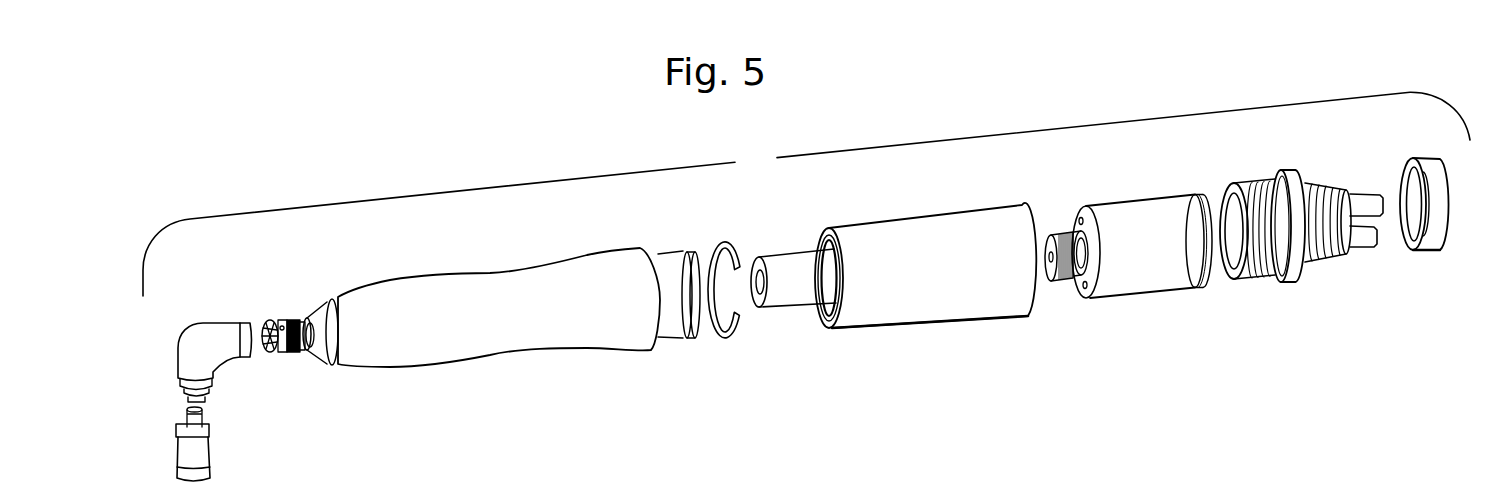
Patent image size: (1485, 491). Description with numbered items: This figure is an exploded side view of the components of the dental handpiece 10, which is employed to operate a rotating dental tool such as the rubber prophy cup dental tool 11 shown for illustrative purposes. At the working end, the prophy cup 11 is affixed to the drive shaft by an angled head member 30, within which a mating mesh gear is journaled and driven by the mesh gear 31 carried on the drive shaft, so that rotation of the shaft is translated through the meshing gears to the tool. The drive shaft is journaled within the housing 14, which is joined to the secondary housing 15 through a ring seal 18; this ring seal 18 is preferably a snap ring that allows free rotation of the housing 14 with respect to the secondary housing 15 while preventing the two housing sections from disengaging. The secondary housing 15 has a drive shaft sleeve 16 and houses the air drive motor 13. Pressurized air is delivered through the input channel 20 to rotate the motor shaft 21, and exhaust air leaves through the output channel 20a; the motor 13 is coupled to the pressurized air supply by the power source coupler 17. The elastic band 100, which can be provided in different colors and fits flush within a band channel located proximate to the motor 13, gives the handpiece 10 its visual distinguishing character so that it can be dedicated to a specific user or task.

The handpiece 10 is at (777, 158).
The angled head member 30 is at (201, 340).
The mesh gear 31 is at (267, 352).
The rubber prophy cup dental tool 11 is at (210, 468).
The housing 14 is at (523, 333).
The ring seal 18 is at (723, 338).
The drive shaft sleeve 16 is at (790, 300).
The secondary housing 15 is at (948, 307).
The motor shaft 21 is at (1067, 280).
The air drive motor 13 is at (1150, 270).
The power source coupler 17 is at (1292, 283).
The pressurized air input channel 20 is at (1373, 246).
The output or exhaust channel 20a is at (1367, 200).
The elastic band 100 is at (1437, 237).